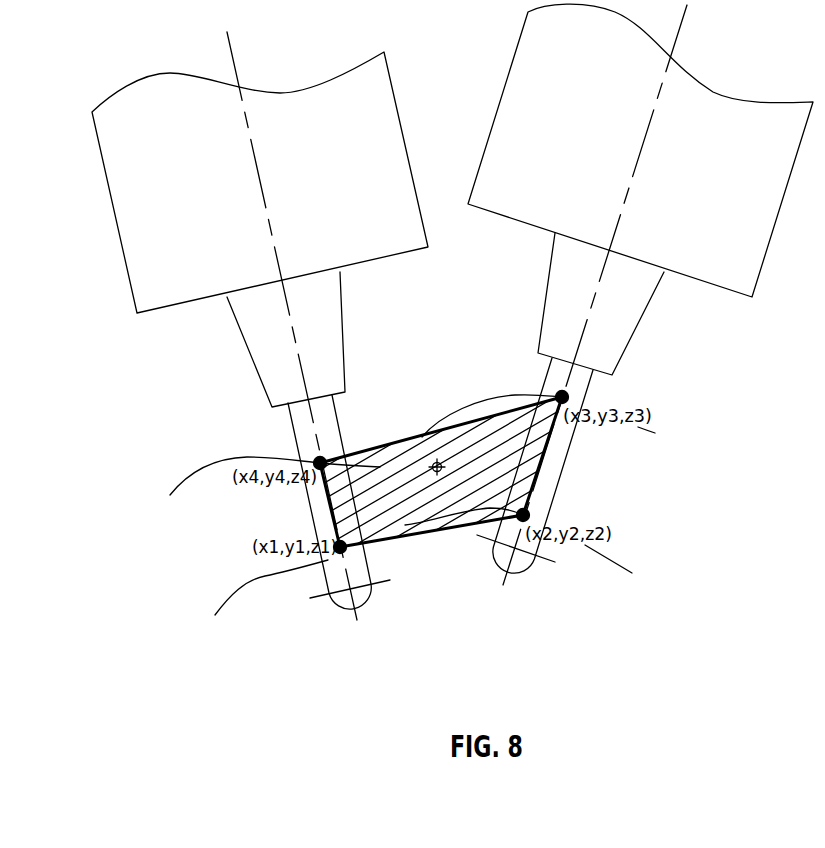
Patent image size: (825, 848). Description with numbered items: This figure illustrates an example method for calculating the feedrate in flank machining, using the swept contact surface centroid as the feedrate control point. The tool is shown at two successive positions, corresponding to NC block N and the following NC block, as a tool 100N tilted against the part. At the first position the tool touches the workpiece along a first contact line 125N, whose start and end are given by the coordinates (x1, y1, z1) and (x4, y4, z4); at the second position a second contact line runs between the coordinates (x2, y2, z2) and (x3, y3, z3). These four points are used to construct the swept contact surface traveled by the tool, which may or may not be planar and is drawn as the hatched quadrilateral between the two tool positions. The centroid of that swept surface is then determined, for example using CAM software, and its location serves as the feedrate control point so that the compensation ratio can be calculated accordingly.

The machining unit / tool spindle N 100N is at (295, 435).
The contact line 125N is at (330, 498).